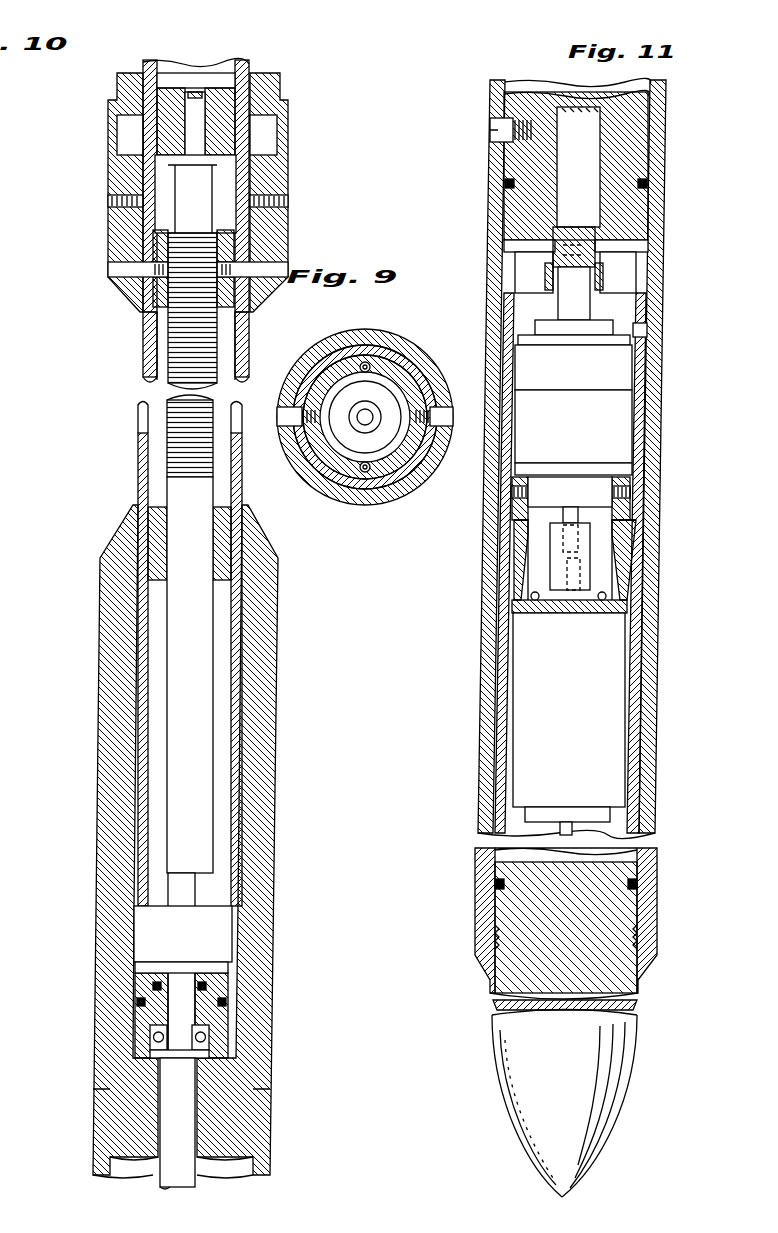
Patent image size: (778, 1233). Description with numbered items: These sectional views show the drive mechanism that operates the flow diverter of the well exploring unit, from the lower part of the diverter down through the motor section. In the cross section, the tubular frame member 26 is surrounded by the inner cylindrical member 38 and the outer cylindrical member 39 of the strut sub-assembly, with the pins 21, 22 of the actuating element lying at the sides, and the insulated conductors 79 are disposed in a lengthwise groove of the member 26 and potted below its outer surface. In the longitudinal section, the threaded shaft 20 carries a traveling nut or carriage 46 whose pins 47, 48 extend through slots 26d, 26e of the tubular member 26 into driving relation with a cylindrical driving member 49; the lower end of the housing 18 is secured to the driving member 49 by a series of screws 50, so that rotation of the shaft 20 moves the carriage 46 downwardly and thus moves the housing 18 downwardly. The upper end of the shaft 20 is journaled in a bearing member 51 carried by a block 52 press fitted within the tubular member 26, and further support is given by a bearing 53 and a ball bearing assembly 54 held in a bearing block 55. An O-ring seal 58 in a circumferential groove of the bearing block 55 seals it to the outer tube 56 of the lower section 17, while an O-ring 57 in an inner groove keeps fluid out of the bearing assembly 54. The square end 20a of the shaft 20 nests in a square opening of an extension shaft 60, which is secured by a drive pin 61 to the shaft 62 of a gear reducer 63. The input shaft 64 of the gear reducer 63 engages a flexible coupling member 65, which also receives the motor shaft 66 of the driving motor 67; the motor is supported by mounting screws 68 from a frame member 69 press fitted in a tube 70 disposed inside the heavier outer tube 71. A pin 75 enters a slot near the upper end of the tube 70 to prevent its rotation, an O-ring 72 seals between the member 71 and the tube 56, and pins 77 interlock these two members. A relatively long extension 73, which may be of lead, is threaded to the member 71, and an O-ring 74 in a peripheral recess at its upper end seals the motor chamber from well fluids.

In FIG. 10, the lower section 17 is at (280, 739).
In FIG. 11, the lower section 17 is at (662, 660).
In FIG. 10, the housing 18 is at (108, 143).
In FIG. 9, the housing 18 is at (403, 498).
In FIG. 10, the threaded shaft 20 is at (200, 663).
In FIG. 9, the threaded shaft 20 is at (363, 413).
In FIG. 10, the square end 20a is at (176, 1082).
In FIG. 9, the pin 21 is at (450, 418).
In FIG. 9, the pin 22 is at (283, 410).
In FIG. 10, the tubular member 26 is at (252, 68).
In FIG. 9, the tubular member 26 is at (397, 378).
In FIG. 10, the slot 26d is at (140, 415).
In FIG. 10, the slot 26e is at (240, 340).
In FIG. 9, the inner cylindrical member 38 is at (420, 458).
In FIG. 9, the outer cylindrical member 39 is at (350, 488).
In FIG. 10, the traveling nut 46 is at (158, 302).
In FIG. 10, the pin 47 is at (110, 268).
In FIG. 10, the pin 48 is at (275, 272).
In FIG. 10, the cylindrical driving member 49 is at (268, 233).
In FIG. 10, the screws 50 is at (113, 200).
In FIG. 10, the bearing member 51 is at (206, 93).
In FIG. 10, the block 52 is at (285, 88).
In FIG. 9, the block 52 is at (322, 470).
In FIG. 10, the bearing means 53 is at (152, 508).
In FIG. 10, the bearing assembly 54 is at (225, 1028).
In FIG. 10, the bearing block 55 is at (211, 1047).
In FIG. 10, the outer tube 56 is at (258, 942).
In FIG. 11, the outer tube 56 is at (515, 212).
In FIG. 10, the O-ring 57 is at (160, 986).
In FIG. 10, the O-ring seal 58 is at (228, 1001).
In FIG. 10, the extension shaft 60 is at (172, 1126).
In FIG. 11, the extension shaft 60 is at (580, 157).
In FIG. 11, the drive pin 61 is at (593, 285).
In FIG. 11, the shaft 62 is at (578, 315).
In FIG. 11, the gear reducer 63 is at (605, 418).
In FIG. 11, the input shaft 64 is at (570, 515).
In FIG. 11, the coupling member 65 is at (585, 557).
In FIG. 11, the motor shaft 66 is at (572, 575).
In FIG. 11, the driving motor 67 is at (602, 712).
In FIG. 11, the mounting screws 68 is at (530, 599).
In FIG. 11, the frame member 69 is at (531, 543).
In FIG. 11, the tube 70 is at (620, 367).
In FIG. 11, the outer tube 71 is at (660, 107).
In FIG. 11, the O-ring 72 is at (650, 187).
In FIG. 11, the extension 73 is at (498, 1040).
In FIG. 11, the O-ring 74 is at (633, 888).
In FIG. 11, the pin 75 is at (650, 332).
In FIG. 11, the pins 77 is at (492, 122).
In FIG. 9, the conductors 79 is at (370, 366).